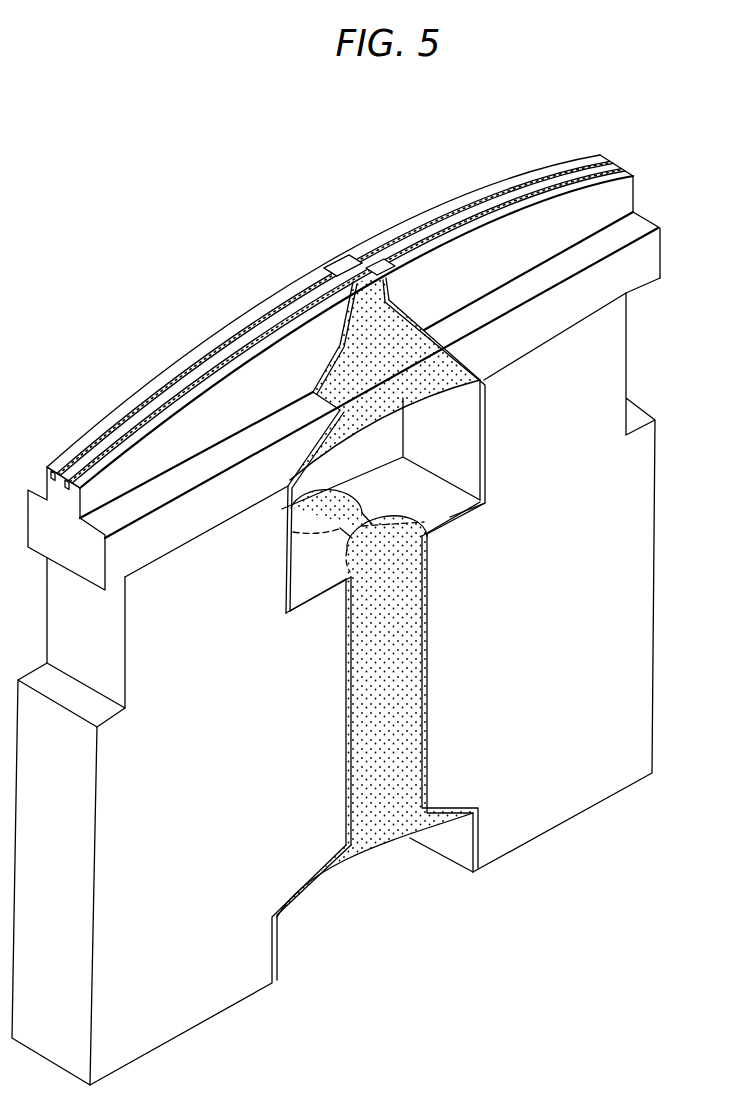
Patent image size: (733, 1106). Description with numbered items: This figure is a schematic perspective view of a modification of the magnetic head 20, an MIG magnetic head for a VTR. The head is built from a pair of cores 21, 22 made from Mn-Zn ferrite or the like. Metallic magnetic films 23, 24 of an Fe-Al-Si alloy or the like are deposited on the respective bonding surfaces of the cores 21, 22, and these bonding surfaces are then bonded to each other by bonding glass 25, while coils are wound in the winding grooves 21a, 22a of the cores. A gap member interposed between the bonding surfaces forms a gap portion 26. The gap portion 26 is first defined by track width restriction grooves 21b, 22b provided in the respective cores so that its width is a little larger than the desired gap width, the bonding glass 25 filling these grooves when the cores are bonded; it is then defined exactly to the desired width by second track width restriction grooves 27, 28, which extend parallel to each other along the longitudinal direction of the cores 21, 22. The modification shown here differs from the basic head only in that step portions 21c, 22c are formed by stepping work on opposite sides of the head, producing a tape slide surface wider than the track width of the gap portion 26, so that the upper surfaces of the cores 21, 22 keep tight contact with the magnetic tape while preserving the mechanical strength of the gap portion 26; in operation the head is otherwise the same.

The magnetic head 20 is at (185, 288).
The core 21 is at (205, 995).
The winding groove 21a is at (302, 500).
The track width restriction groove 21b is at (330, 268).
The step portion 21c is at (160, 492).
The core 22 is at (552, 806).
The winding groove 22a is at (445, 405).
The track width restriction groove 22b is at (334, 264).
The step portion 22c is at (636, 226).
The metallic magnetic film 23 is at (333, 330).
The metallic magnetic film 24 is at (393, 284).
The bonding glass 25 is at (434, 368).
The gap portion 26 is at (398, 268).
The second track width restriction groove 27 is at (467, 203).
The second track width restriction groove 28 is at (530, 190).